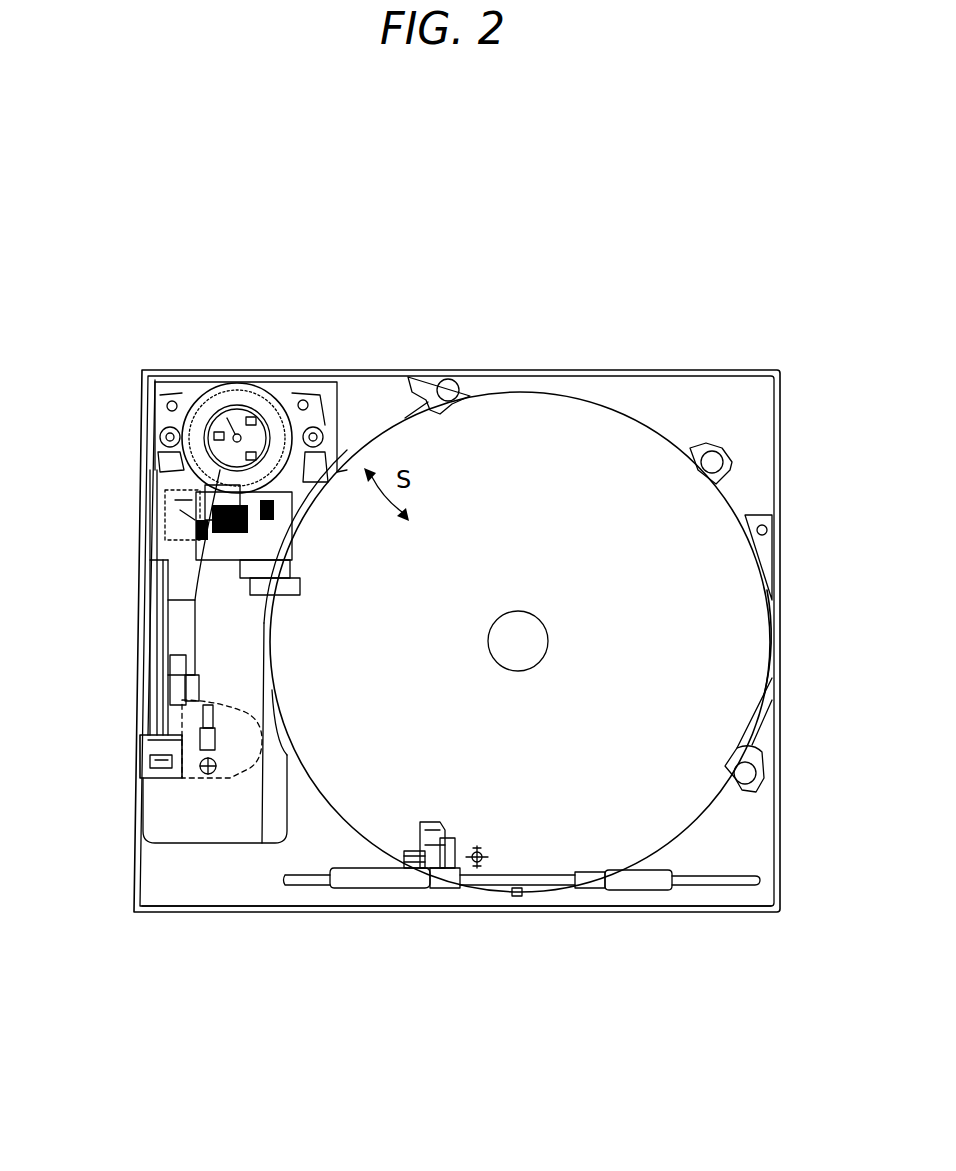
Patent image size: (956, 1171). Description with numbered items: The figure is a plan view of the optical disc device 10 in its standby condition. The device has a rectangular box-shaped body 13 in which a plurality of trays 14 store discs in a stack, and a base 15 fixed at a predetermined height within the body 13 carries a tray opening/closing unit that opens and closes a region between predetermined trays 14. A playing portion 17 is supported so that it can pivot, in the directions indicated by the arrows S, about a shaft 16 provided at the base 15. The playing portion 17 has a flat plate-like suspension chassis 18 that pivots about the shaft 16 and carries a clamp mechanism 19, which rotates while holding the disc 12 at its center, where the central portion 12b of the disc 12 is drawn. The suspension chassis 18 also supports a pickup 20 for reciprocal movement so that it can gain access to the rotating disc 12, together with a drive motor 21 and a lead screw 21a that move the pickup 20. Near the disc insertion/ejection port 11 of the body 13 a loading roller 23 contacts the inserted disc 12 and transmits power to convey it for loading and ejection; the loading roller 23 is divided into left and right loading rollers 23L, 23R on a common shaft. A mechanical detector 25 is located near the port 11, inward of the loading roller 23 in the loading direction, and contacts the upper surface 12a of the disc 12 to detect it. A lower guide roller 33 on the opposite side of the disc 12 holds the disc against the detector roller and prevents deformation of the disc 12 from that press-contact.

The optical disc device 10 is at (760, 336).
The disc insertion/ejection port 11 is at (484, 912).
The disc 12 is at (765, 645).
The upper surface of the disc 12a is at (752, 586).
The center hole of disk 12b is at (518, 611).
The body 13 is at (790, 457).
The trays 14 is at (758, 775).
The base 15 is at (262, 843).
The shaft 16 is at (208, 776).
The playing portion 17 is at (272, 624).
The suspension chassis 18 is at (256, 668).
The clamp mechanism 19 is at (232, 425).
The pickup 20 is at (277, 550).
The drive motor 21 is at (140, 765).
The lead screw 21a is at (165, 595).
The loading roller 23 is at (676, 855).
The left loading roller 23L is at (380, 888).
The right loading roller 23R is at (638, 890).
The mechanical detector 25 is at (420, 796).
The lower guide roller 33 is at (477, 842).